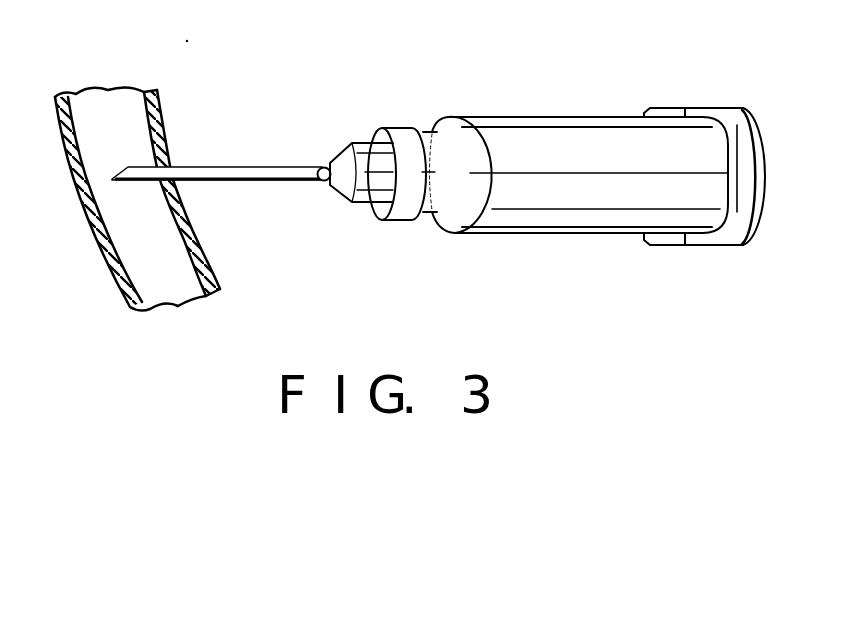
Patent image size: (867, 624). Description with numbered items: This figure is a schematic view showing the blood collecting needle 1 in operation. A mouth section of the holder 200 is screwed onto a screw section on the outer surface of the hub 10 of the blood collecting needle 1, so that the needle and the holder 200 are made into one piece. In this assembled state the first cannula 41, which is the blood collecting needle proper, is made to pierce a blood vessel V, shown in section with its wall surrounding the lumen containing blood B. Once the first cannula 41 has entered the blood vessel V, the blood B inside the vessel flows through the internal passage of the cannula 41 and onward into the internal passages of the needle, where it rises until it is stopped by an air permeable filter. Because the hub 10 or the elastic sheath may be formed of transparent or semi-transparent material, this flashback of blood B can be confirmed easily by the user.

The blood collecting needle 1 is at (282, 110).
The hub 10 is at (390, 117).
The first cannula 41 is at (200, 173).
The holder 200 is at (594, 107).
The blood B is at (117, 104).
The blood vessel V is at (102, 257).